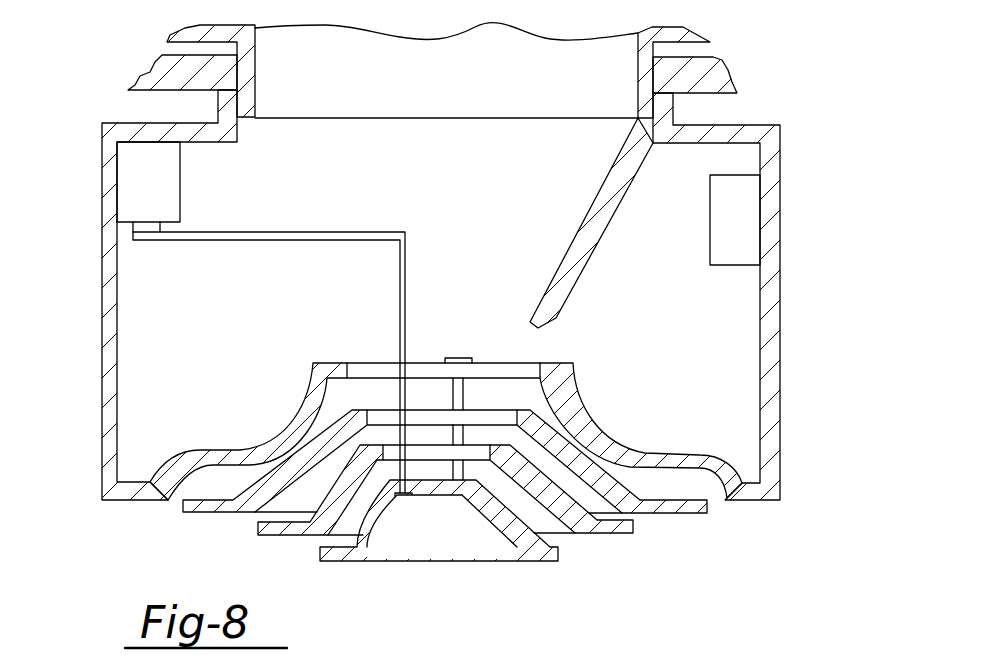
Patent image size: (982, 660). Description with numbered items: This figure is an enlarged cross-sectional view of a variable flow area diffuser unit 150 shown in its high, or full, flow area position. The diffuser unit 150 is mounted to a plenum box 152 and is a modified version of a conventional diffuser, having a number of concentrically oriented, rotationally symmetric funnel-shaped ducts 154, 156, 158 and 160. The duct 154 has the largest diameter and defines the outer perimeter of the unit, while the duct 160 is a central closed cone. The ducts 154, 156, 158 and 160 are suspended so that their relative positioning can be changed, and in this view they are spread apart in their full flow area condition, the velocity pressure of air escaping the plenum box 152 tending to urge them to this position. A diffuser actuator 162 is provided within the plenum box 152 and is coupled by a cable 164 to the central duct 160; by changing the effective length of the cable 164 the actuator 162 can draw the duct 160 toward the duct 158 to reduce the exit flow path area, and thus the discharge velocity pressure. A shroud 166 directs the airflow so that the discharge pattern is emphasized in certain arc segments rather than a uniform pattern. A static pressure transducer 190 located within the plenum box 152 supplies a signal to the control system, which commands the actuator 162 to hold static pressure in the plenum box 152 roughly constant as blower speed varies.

The variable flow area diffuser unit 150 is at (102, 342).
The plenum box 152 is at (781, 330).
The funnel-shaped duct 154 is at (718, 495).
The funnel-shaped duct 156 is at (673, 517).
The funnel-shaped duct 158 is at (617, 533).
The central closed cone duct 160 is at (540, 562).
The diffuser actuator 162 is at (185, 197).
The cable 164 is at (387, 232).
The shroud 166 is at (566, 300).
The static pressure transducer 190 is at (710, 212).